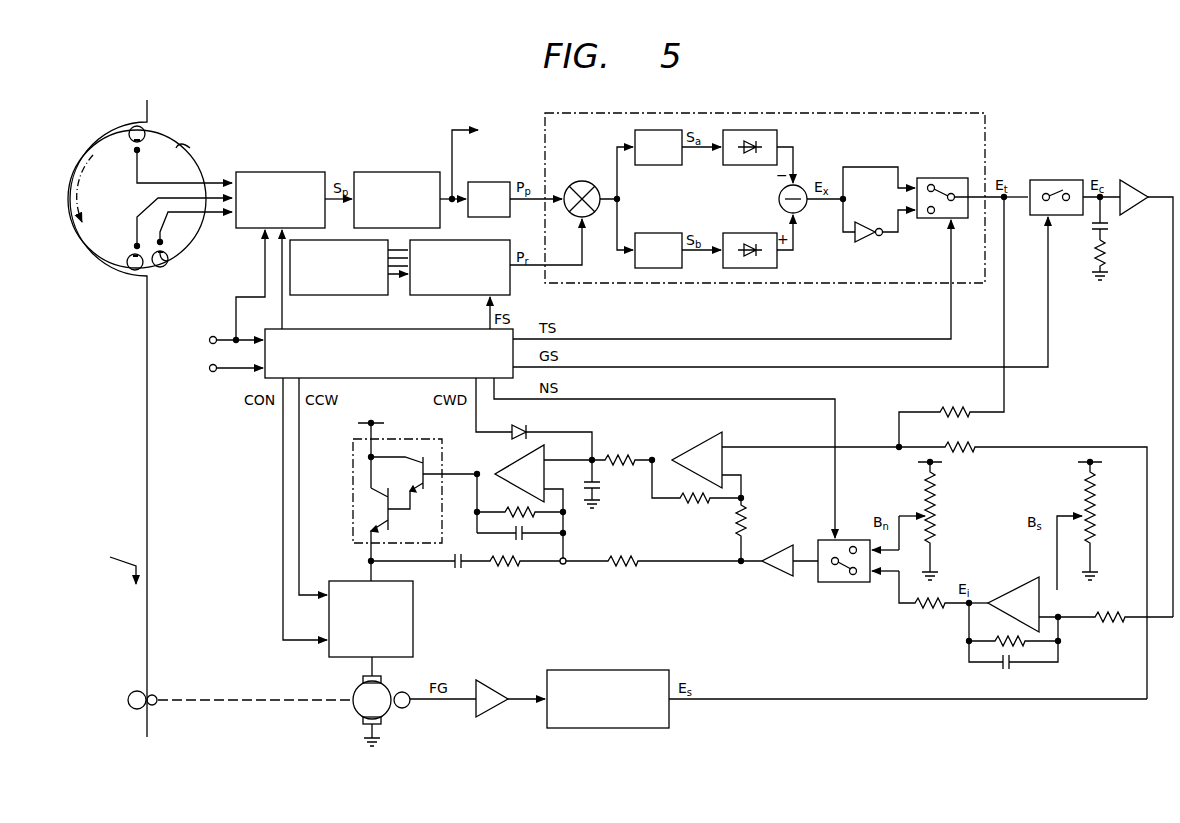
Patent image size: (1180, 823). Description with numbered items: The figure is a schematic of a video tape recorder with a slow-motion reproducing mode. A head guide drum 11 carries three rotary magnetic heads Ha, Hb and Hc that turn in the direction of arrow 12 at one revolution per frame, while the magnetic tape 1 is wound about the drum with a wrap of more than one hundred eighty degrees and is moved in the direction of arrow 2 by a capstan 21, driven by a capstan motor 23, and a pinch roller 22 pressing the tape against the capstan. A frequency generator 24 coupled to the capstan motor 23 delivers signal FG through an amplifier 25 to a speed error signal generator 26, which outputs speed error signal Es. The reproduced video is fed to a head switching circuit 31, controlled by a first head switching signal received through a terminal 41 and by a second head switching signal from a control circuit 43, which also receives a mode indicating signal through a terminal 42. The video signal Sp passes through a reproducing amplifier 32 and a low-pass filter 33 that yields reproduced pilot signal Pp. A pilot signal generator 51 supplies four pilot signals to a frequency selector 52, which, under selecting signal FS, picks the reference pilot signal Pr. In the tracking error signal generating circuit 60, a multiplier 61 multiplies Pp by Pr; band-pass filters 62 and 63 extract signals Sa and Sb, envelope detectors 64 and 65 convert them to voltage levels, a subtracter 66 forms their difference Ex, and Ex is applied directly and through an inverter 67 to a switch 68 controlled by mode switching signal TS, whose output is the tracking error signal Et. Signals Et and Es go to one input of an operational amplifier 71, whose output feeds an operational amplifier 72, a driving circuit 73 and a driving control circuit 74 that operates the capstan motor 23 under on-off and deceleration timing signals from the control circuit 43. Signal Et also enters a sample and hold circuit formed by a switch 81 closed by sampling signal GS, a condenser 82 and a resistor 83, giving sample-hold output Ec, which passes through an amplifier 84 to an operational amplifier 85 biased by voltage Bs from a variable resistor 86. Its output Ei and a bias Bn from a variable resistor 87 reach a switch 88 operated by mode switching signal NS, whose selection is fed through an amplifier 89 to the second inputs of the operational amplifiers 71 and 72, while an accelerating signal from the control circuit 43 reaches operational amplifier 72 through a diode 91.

The magnetic tape 1 is at (147, 468).
The arrow 2 is at (114, 565).
The head guide drum 11 is at (203, 160).
The arrow 12 is at (86, 212).
The capstan 21 is at (155, 705).
The pinch roller 22 is at (135, 709).
The capstan motor 23 is at (353, 712).
The frequency generator 24 is at (405, 708).
The amplifier 25 is at (494, 680).
The speed error signal generator 26 is at (630, 670).
The head switching circuit 31 is at (288, 172).
The reproducing amplifier 32 is at (405, 172).
The low-pass filter 33 is at (480, 182).
The terminal 41 is at (213, 336).
The terminal 42 is at (213, 372).
The control circuit 43 is at (370, 378).
The pilot signal generator 51 is at (348, 295).
The frequency selector 52 is at (445, 295).
The tracking error signal generating circuit 60 is at (935, 113).
The multiplier 61 is at (582, 181).
The band-pass filter 62 is at (659, 165).
The band-pass filter 63 is at (662, 233).
The envelope detector 64 is at (750, 165).
The envelope detector 65 is at (753, 233).
The subtracter 66 is at (805, 208).
The inverter 67 is at (870, 240).
The switch 68 is at (940, 178).
The operational amplifier 71 is at (672, 444).
The operational amplifier 72 is at (495, 464).
The driving circuit 73 is at (353, 512).
The driving control circuit 74 is at (413, 593).
The switch 81 is at (1050, 180).
The condenser 82 is at (1108, 226).
The resistor 83 is at (1108, 255).
The amplifier 84 is at (1135, 180).
The operational amplifier 85 is at (1018, 582).
The variable resistor 86 is at (1096, 516).
The variable resistor 87 is at (936, 516).
The switch 88 is at (845, 582).
The amplifier 89 is at (783, 578).
The diode 91 is at (522, 428).